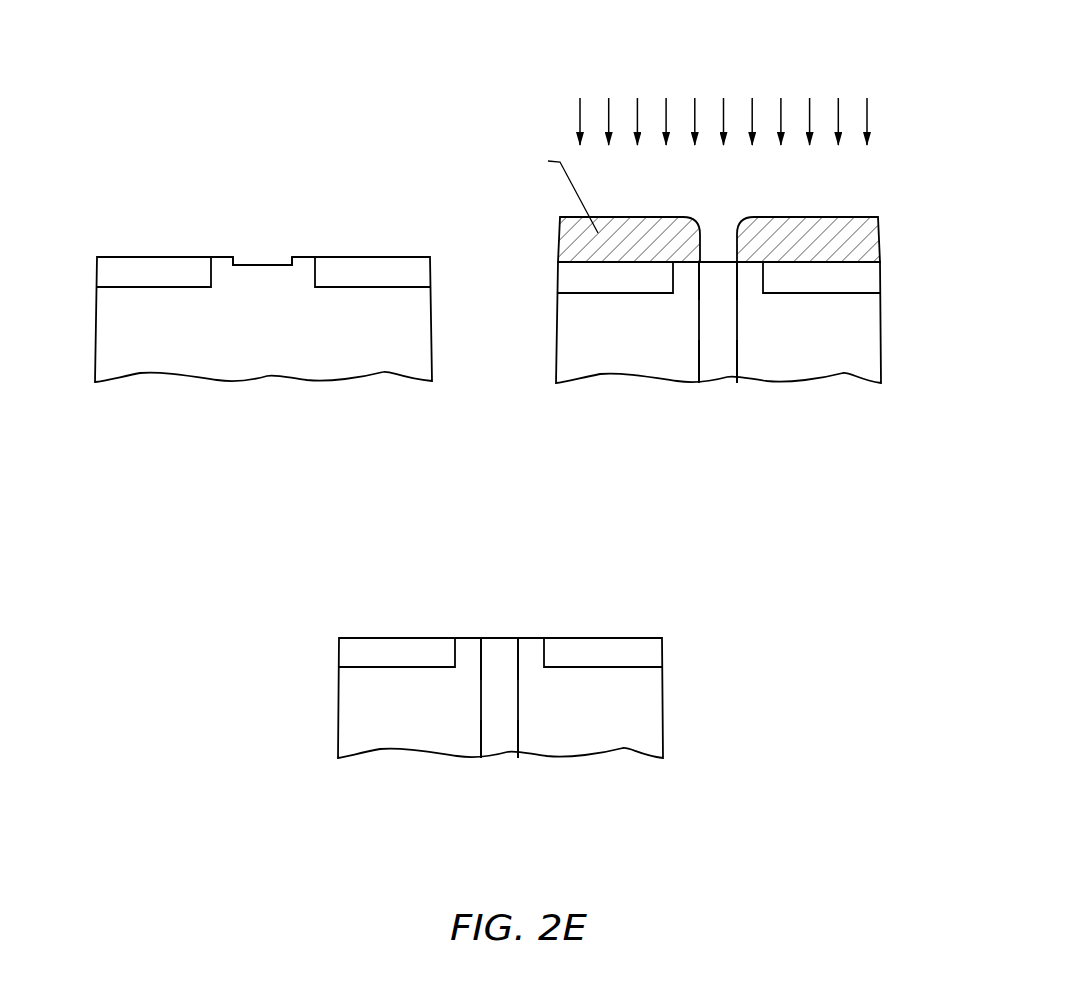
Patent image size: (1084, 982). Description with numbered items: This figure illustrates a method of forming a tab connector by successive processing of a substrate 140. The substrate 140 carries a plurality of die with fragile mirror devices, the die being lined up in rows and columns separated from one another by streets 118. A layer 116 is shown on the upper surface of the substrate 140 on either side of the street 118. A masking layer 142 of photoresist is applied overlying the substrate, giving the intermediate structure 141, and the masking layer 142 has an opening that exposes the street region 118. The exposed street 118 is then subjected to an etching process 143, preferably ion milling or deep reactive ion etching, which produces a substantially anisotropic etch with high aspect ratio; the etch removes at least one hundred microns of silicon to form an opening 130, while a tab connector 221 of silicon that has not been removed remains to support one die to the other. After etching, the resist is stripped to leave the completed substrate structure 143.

The dielectric layer 116 is at (338, 258).
The street 118 is at (253, 263).
The opening 130 is at (722, 278).
The substrate 140 is at (300, 180).
The substrate structure with photoresist 141 is at (865, 173).
The masking layer 142 is at (797, 217).
The etching process 143 is at (767, 78).
The tab connector 221 is at (719, 363).